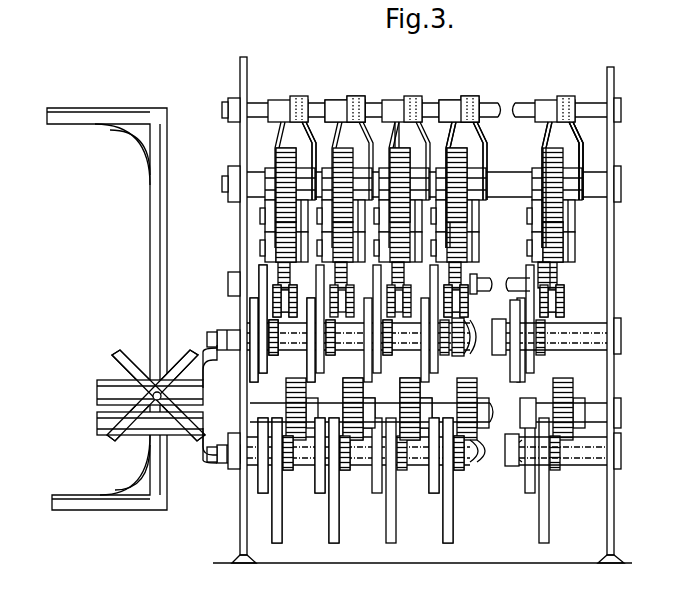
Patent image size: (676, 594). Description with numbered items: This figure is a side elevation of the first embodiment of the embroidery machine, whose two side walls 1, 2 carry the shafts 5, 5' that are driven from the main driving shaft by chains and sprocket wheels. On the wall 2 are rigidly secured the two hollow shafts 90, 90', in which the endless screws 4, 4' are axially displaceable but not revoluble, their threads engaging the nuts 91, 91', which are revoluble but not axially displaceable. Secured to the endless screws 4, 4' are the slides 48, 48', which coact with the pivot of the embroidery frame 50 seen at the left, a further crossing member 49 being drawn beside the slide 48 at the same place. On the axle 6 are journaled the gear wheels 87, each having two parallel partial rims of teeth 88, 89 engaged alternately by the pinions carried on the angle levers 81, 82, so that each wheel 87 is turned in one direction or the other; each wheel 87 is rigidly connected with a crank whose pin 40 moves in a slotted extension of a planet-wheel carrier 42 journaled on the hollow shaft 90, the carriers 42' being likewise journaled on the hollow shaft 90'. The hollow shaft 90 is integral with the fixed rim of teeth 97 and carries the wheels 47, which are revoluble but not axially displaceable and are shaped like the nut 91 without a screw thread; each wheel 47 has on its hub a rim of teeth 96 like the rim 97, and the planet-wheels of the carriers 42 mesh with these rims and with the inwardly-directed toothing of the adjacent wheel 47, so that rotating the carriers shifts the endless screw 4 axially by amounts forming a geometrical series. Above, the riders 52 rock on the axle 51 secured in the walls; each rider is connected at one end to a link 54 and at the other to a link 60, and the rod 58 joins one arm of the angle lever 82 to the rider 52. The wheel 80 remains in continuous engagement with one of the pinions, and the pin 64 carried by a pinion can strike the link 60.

The side wall 1 is at (240, 255).
The side wall 2 is at (607, 264).
The endless screw 4 is at (343, 384).
The endless screw 4' is at (375, 463).
The shaft 5 is at (421, 181).
The shaft 5' is at (435, 406).
The axle 6 is at (483, 284).
The pin 40 is at (526, 278).
The planet-wheel carrier 42 is at (396, 409).
The planet-wheel carrier 42' is at (373, 480).
The wheel 47 is at (312, 380).
The slide 48 is at (158, 386).
The slide 48' is at (151, 404).
The arm 49 is at (172, 362).
The embroidery frame 50 is at (167, 300).
The axle 51 is at (320, 103).
The rider 52 is at (352, 100).
The link 54 is at (414, 157).
The rod 58 is at (424, 140).
The link 60 is at (399, 136).
The pin 64 is at (541, 246).
The wheel 80 is at (278, 153).
The angle lever 81 is at (268, 205).
The angle lever 82 is at (316, 165).
The gear wheel 87 is at (331, 356).
The rim of teeth 88 is at (274, 356).
The rim of teeth 89 is at (293, 318).
The hollow shaft 90 is at (548, 345).
The hollow shaft 90' is at (424, 468).
The nut 91 is at (245, 323).
The nut 91' is at (253, 480).
The rim of teeth 96 is at (458, 356).
The rim of teeth 97 is at (522, 355).